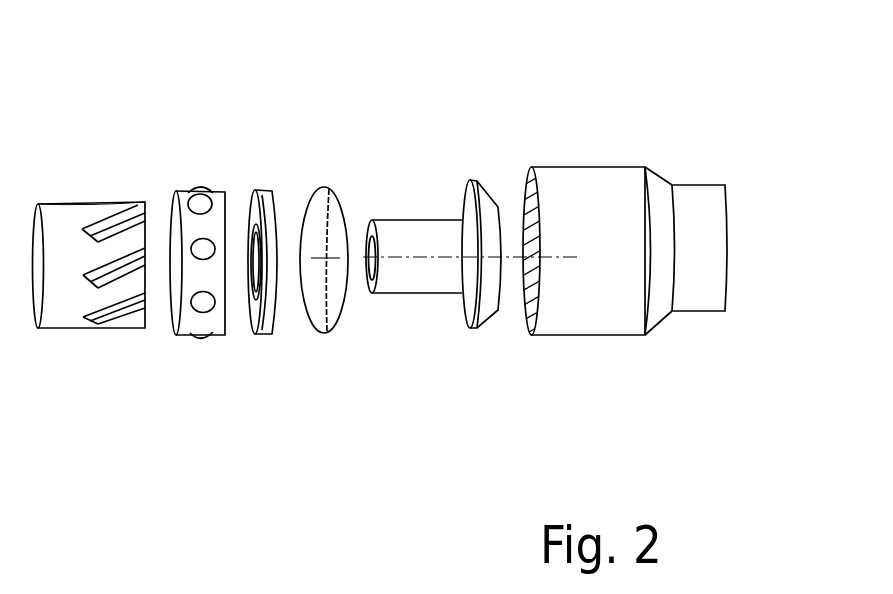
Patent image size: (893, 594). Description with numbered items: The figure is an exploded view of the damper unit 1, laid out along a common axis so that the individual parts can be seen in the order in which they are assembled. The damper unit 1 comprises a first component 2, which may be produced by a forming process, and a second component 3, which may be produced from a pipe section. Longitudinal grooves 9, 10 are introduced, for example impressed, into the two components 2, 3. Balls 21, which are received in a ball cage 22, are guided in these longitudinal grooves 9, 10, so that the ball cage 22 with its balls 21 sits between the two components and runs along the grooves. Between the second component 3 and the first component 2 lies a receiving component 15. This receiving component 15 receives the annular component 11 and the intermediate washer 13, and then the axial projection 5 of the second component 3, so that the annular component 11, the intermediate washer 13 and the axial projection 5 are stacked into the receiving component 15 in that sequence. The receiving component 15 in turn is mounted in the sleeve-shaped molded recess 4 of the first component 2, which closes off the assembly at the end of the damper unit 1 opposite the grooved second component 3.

The damper unit 1 is at (617, 392).
The first component 2 is at (691, 195).
The second component 3 is at (87, 225).
The sleeve-shaped molded recess 4 is at (593, 186).
The axial projection 5 is at (62, 214).
The longitudinal groove 9 is at (528, 168).
The longitudinal groove 10 is at (118, 214).
The annular component 11 is at (333, 202).
The intermediate washer 13 is at (268, 188).
The receiving component 15 is at (412, 230).
The balls 21 is at (205, 225).
The ball cage 22 is at (218, 320).